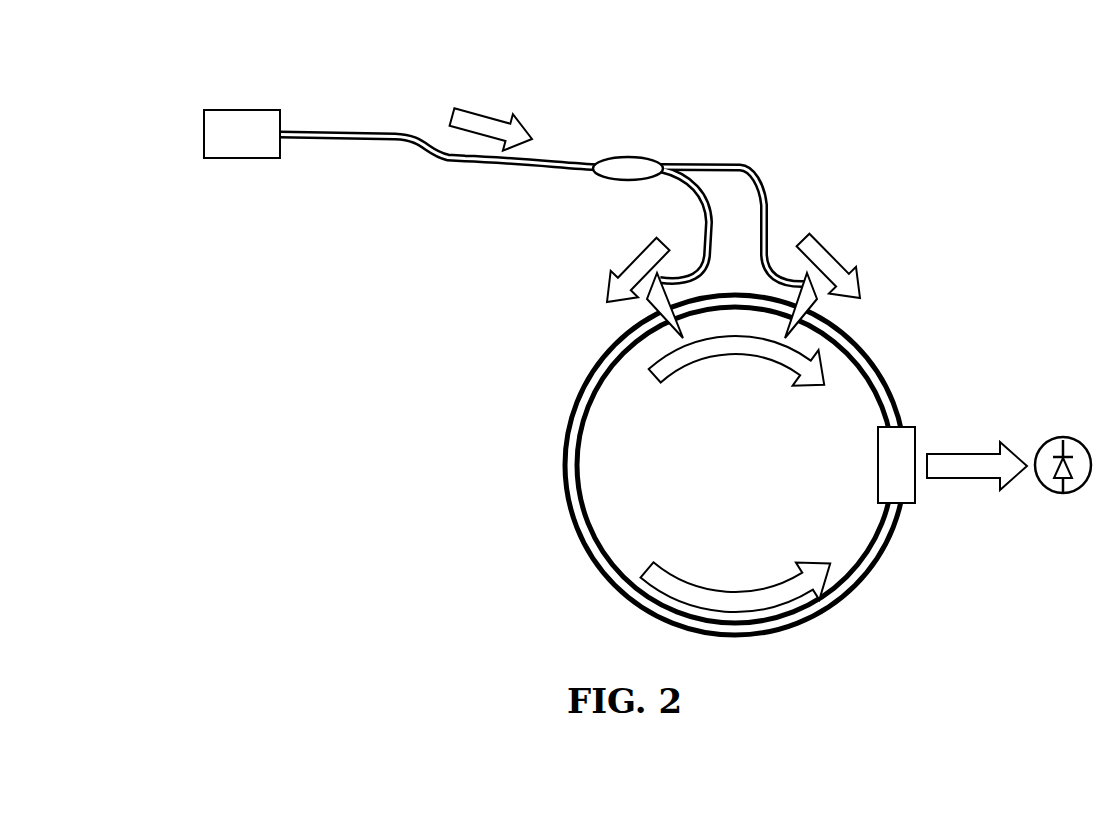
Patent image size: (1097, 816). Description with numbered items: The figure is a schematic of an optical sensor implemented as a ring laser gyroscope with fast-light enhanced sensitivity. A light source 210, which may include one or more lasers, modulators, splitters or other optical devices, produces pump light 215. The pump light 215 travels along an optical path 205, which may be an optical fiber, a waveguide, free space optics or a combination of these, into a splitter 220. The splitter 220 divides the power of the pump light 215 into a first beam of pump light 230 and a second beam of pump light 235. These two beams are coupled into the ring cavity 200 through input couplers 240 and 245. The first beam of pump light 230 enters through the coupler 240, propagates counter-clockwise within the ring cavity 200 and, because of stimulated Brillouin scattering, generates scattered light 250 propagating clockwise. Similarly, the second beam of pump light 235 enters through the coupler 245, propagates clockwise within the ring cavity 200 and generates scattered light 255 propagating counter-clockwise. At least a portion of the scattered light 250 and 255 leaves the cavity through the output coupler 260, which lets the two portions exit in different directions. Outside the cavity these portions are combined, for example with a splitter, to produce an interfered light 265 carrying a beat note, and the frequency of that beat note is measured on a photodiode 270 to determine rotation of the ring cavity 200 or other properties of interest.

The ring cavity 200 is at (605, 490).
The optical path 205 is at (578, 163).
The light source 210 is at (242, 134).
The pump light 215 is at (491, 116).
The splitter 220 is at (628, 155).
The first beam of pump light 230 is at (637, 270).
The second beam of pump light 235 is at (837, 268).
The input coupler 240 is at (665, 310).
The input coupler 245 is at (800, 312).
The scattered light 250 is at (737, 372).
The scattered light 255 is at (736, 575).
The output coupler 260 is at (903, 448).
The interfered light 265 is at (983, 463).
The photodiode 270 is at (1063, 488).